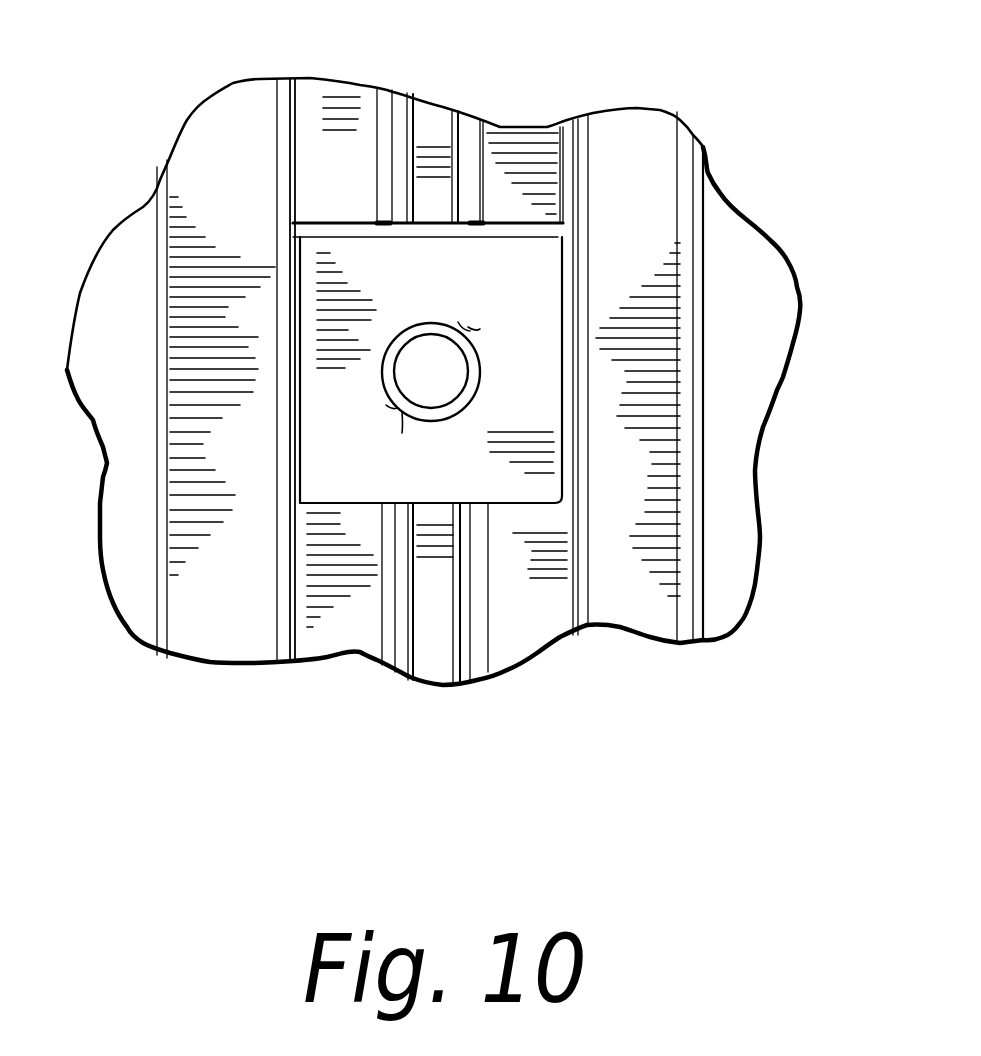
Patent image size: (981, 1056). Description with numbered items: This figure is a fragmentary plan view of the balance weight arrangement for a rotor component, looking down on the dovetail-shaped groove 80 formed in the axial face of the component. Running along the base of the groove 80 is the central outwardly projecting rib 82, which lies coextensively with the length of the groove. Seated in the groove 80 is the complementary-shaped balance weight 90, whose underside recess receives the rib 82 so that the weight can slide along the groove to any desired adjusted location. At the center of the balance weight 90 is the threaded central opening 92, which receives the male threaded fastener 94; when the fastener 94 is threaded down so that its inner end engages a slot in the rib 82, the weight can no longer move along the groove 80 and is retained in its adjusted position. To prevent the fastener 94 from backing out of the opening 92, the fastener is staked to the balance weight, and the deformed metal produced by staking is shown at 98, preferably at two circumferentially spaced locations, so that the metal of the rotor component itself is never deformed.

The dovetail-shaped groove 80 is at (540, 143).
The rib 82 is at (425, 123).
The balance weight 90 is at (530, 296).
The central opening 92 is at (442, 415).
The threaded fastener 94 is at (448, 387).
The deformed metal from staking 98 is at (462, 328).